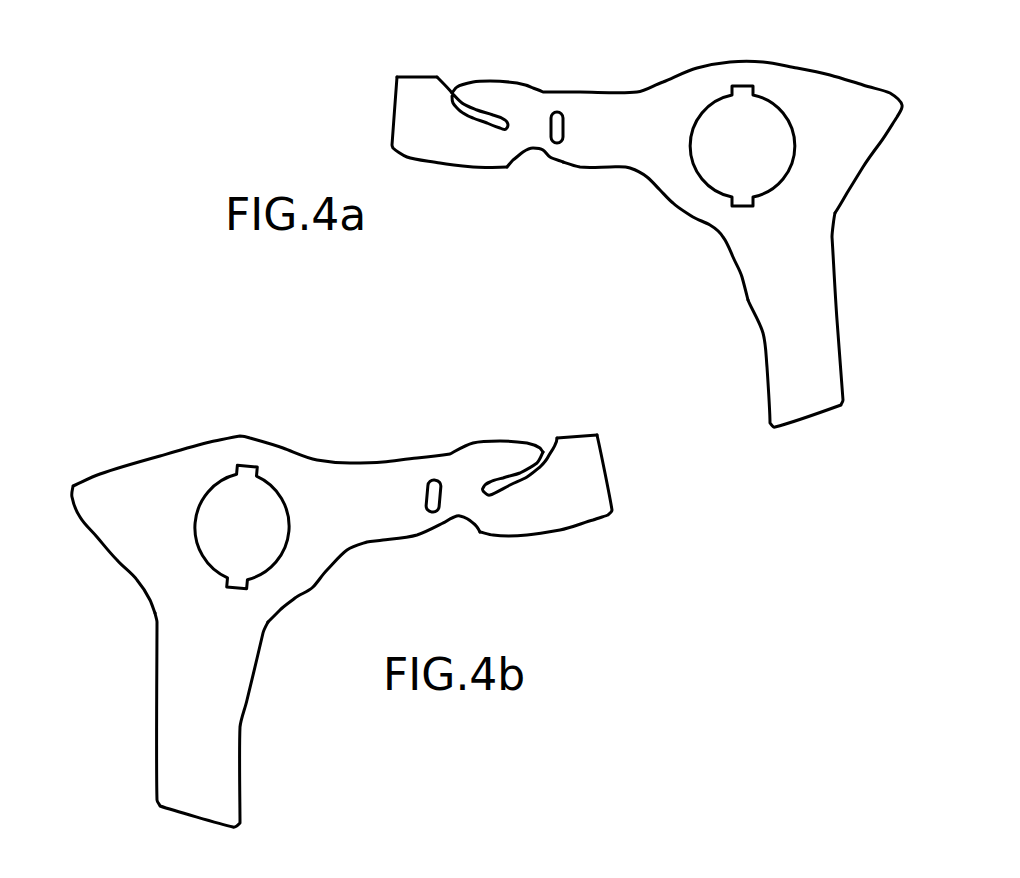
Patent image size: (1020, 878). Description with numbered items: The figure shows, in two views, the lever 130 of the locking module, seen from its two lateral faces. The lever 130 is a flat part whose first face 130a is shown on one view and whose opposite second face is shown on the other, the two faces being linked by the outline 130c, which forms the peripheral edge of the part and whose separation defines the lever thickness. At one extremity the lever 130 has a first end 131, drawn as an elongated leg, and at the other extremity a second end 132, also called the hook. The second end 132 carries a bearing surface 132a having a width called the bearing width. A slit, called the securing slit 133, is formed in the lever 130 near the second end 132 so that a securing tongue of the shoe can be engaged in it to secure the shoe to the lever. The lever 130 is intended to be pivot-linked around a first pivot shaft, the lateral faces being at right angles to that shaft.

In FIG. 4A, the lever 130 is at (322, 75).
In FIG. 4B, the lever 130 is at (156, 432).
In FIG. 4A, the first face 130a is at (642, 123).
In FIG. 4B, the first face 130a is at (355, 497).
In FIG. 4A, the outline 130c is at (748, 300).
In FIG. 4A, the first end 131 is at (820, 377).
In FIG. 4B, the first end 131 is at (173, 787).
In FIG. 4A, the second end 132 is at (418, 130).
In FIG. 4B, the second end 132 is at (575, 503).
In FIG. 4A, the bearing surface 132a is at (412, 76).
In FIG. 4B, the bearing surface 132a is at (577, 436).
In FIG. 4A, the securing slit 133 is at (456, 110).